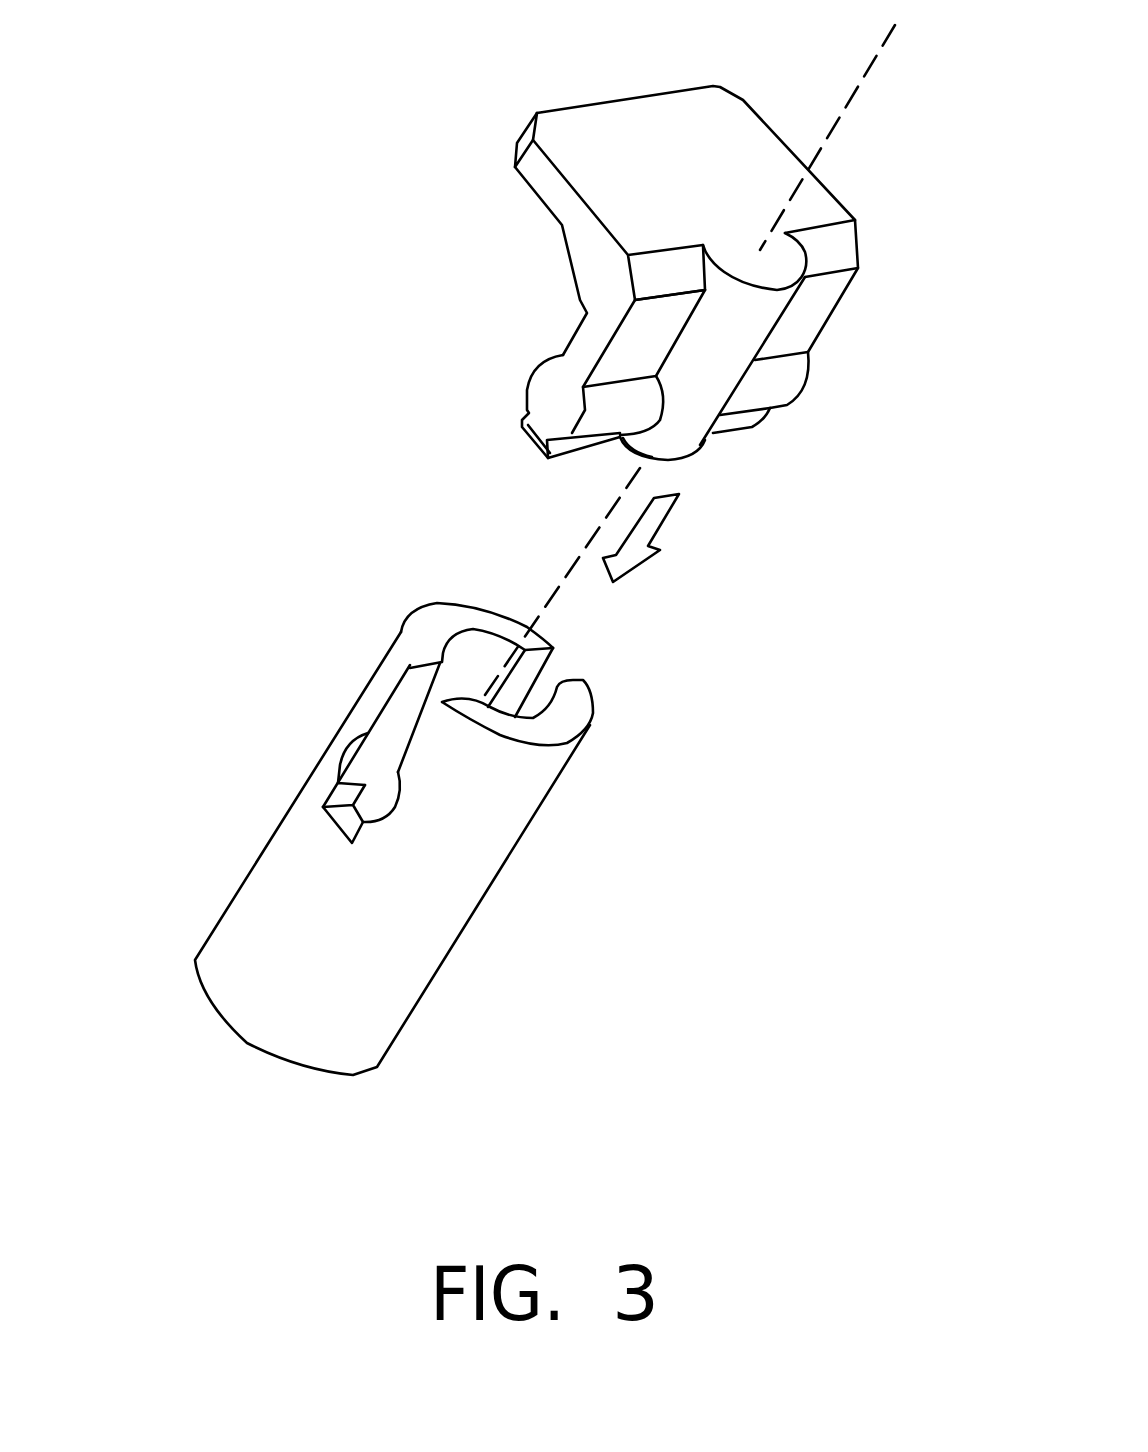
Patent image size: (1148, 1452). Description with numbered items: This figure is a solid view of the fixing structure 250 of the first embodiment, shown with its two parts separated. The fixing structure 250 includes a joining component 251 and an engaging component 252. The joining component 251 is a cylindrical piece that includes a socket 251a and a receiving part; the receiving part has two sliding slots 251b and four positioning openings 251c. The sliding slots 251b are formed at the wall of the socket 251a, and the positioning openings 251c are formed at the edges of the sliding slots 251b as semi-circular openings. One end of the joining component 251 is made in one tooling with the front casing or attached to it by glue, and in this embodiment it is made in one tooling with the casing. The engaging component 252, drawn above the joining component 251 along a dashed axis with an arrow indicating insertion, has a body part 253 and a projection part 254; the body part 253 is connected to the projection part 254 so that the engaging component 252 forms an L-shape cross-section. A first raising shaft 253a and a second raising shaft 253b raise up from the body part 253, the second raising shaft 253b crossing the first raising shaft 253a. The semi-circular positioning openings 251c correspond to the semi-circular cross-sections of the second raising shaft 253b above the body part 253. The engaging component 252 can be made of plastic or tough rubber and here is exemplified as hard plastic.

The fixing structure 250 is at (832, 1117).
The joining component 251 is at (510, 863).
The socket 251a is at (486, 651).
The sliding slots 251b is at (400, 707).
The positioning openings 251c is at (405, 815).
The engaging component 252 is at (834, 321).
The body part 253 is at (583, 342).
The first raising shaft 253a is at (688, 436).
The second raising shaft 253b is at (547, 400).
The projection part 254 is at (628, 123).